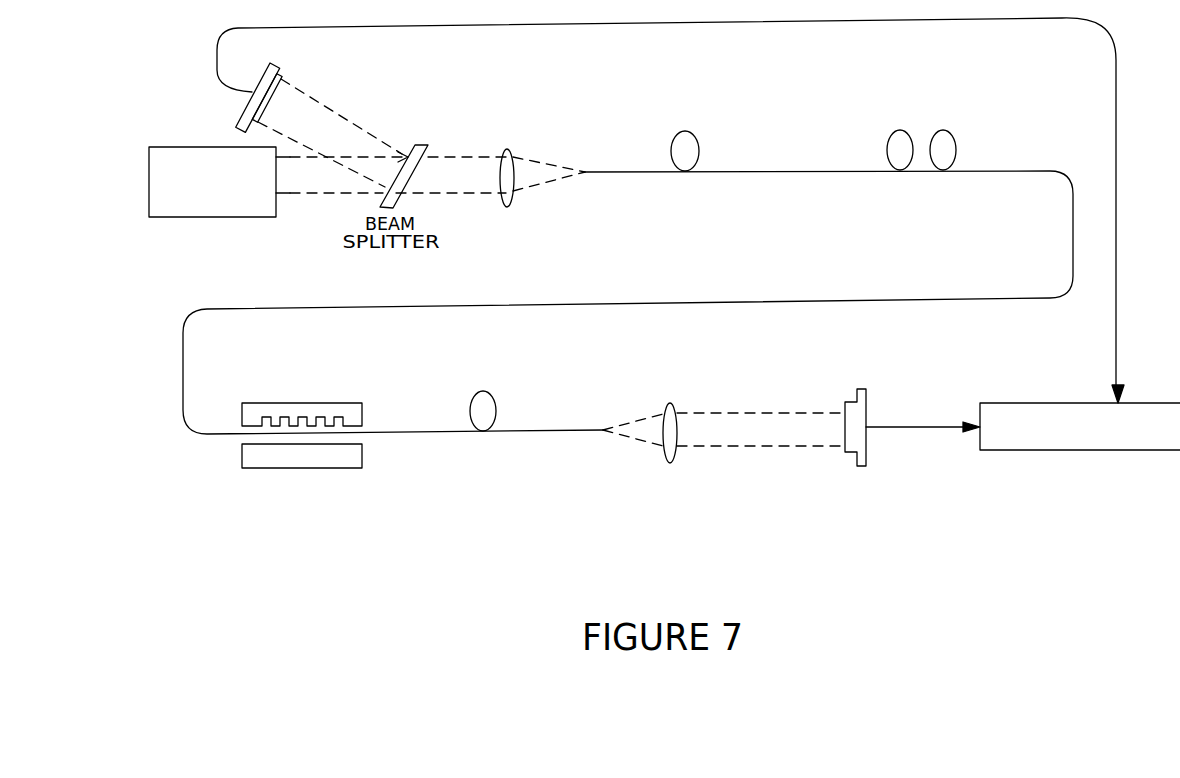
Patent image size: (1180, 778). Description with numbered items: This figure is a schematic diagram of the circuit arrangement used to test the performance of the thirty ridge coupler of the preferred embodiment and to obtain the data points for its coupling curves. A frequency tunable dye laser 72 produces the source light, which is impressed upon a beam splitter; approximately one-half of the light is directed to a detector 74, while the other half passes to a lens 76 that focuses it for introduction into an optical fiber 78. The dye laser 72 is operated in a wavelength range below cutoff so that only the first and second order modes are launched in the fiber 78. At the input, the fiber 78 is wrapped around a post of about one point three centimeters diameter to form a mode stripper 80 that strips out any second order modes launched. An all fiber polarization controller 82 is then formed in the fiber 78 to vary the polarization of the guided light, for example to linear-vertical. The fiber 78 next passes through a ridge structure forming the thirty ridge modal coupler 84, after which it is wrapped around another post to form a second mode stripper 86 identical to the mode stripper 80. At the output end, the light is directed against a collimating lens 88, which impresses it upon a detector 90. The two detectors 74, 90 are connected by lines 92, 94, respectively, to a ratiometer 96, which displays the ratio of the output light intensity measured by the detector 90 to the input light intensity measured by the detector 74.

The dye laser 72 is at (149, 184).
The detector 74 is at (249, 102).
The lens 76 is at (509, 152).
The optical fiber 78 is at (593, 175).
The mode stripper 80 is at (694, 134).
The polarization controller 82 is at (956, 133).
The modal coupler 84 is at (325, 402).
The second mode stripper 86 is at (491, 389).
The collimating lens 88 is at (672, 405).
The detector 90 is at (860, 389).
The line 92 is at (1118, 212).
The line 94 is at (892, 428).
The ratiometer 96 is at (1007, 452).